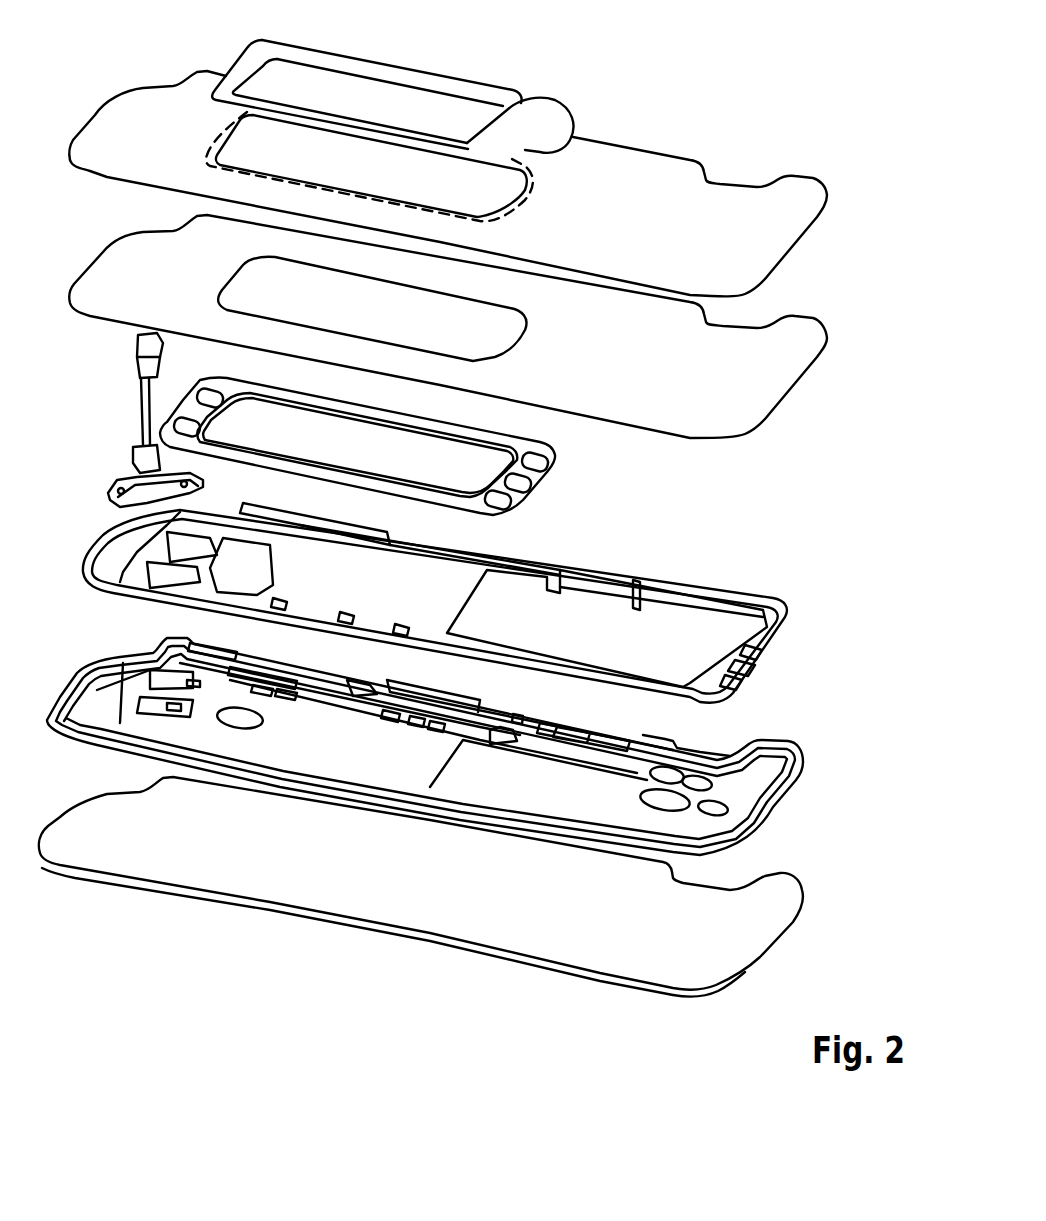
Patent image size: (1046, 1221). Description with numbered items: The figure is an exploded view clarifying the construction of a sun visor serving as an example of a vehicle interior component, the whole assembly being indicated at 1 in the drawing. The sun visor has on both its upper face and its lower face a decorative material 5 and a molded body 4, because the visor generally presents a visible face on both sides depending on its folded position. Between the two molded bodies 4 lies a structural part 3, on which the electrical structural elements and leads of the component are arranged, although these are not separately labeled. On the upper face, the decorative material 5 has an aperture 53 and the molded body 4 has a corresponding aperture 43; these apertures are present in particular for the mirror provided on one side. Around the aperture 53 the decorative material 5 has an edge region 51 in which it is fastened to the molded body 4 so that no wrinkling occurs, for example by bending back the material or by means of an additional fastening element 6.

The display frame 1 is at (530, 128).
The structural part 3 is at (550, 647).
The molded body 4 is at (720, 773).
The decorative material 5 is at (614, 221).
The fastening element 6 is at (409, 432).
The aperture in the molded body 43 is at (405, 324).
The edge region 51 is at (523, 170).
The aperture in the decorative material 53 is at (405, 181).